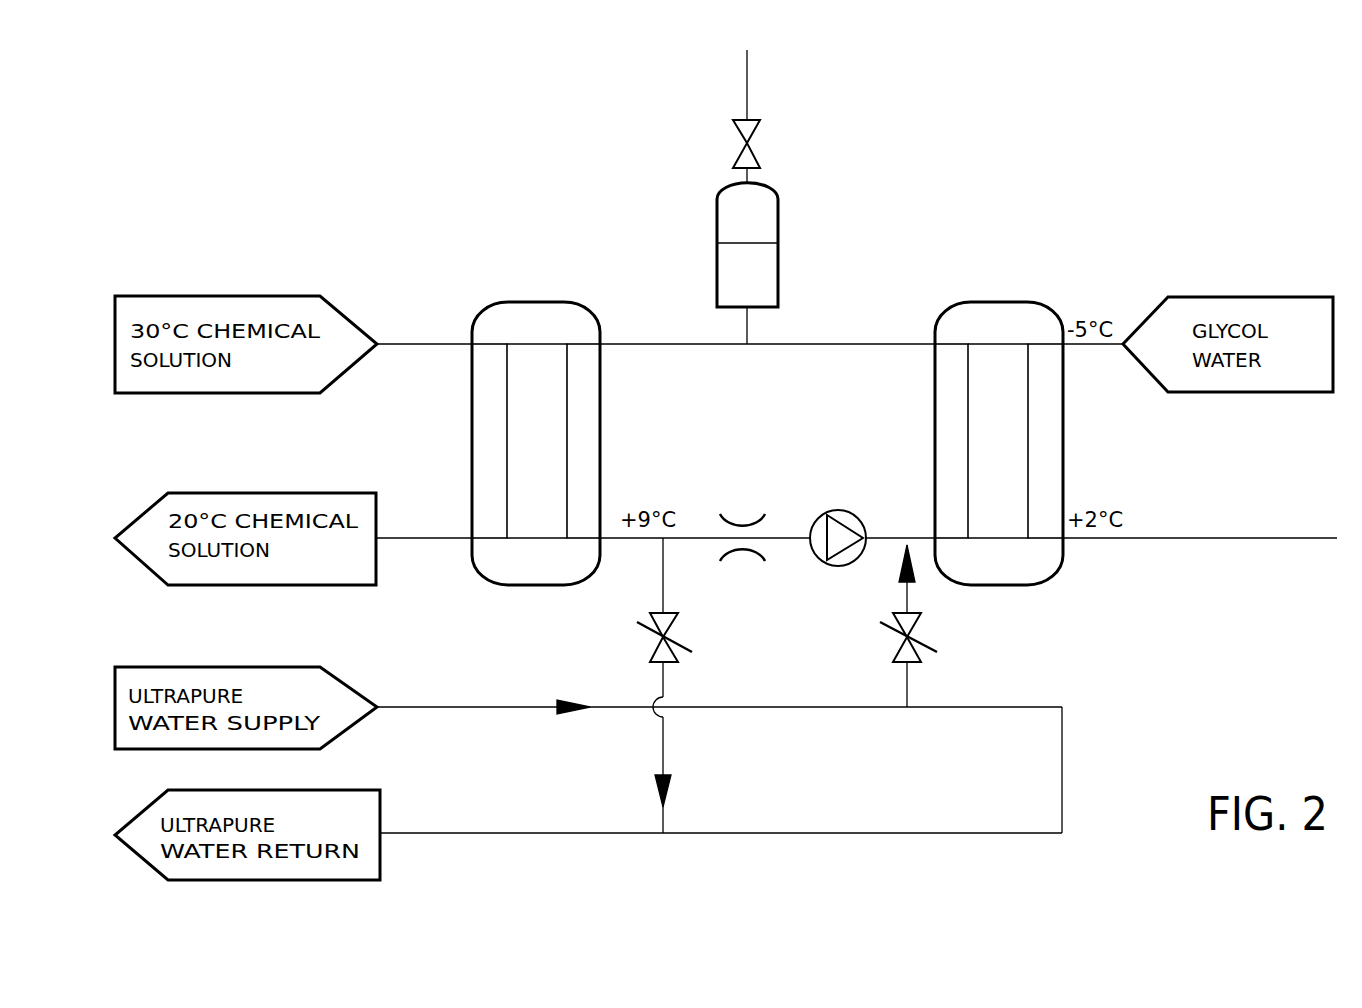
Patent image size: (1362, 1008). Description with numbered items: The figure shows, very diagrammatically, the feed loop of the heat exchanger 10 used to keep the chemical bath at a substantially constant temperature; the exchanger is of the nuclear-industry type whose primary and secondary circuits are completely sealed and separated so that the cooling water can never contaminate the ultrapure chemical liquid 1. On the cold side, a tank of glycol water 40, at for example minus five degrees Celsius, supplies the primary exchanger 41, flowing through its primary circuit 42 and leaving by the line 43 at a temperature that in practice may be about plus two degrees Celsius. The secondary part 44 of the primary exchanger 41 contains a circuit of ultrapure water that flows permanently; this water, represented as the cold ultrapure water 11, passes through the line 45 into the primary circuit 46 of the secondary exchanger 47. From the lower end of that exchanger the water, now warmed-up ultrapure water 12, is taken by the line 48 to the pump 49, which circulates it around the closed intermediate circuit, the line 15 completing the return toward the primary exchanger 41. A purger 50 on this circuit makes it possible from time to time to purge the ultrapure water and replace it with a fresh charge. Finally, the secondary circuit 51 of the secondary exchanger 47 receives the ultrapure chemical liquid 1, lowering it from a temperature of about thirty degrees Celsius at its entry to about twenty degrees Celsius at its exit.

The ultrapure chemical liquid 1 is at (436, 344).
The heat exchanger 10 is at (588, 446).
The cold ultrapure water 11 is at (720, 344).
The warmed-up ultrapure water 12 is at (681, 540).
The line 15 is at (670, 344).
The tank of glycol water 40 is at (1287, 392).
The primary exchanger 41 is at (1063, 560).
The primary circuit 42 is at (1030, 444).
The line 43 is at (1276, 538).
The secondary part 44 is at (968, 406).
The line 45 is at (860, 344).
The primary circuit 46 is at (568, 376).
The secondary exchanger 47 is at (472, 546).
The line 48 is at (791, 537).
The pump 49 is at (850, 511).
The purger 50 is at (767, 219).
The secondary circuit 51 is at (532, 406).